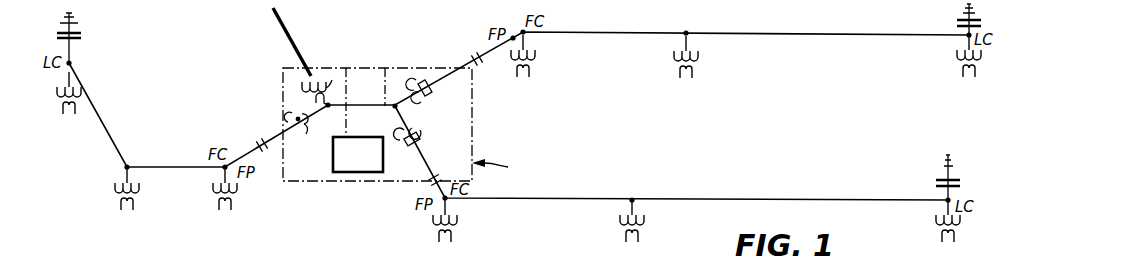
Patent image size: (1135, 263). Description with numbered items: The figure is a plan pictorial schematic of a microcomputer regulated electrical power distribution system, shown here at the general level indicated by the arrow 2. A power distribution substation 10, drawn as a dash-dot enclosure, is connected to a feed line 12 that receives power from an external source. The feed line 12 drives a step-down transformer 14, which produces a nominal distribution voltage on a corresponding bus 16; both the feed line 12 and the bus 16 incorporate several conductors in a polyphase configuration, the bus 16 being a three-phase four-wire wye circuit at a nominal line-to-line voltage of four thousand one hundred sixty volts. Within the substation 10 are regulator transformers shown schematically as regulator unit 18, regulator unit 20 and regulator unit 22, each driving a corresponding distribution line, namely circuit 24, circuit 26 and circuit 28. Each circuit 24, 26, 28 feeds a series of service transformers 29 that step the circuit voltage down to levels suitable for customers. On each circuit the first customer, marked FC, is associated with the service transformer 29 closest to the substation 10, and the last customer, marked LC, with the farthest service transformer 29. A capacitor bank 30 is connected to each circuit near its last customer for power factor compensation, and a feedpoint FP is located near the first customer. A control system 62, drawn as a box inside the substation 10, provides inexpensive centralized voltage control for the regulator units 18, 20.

The detail arrow 2 is at (500, 172).
The power distribution substation 10 is at (472, 138).
The feed line 12 is at (290, 15).
The step-down transformer 14 is at (331, 79).
The bus 16 is at (355, 101).
The regulator unit 18 is at (434, 97).
The regulator unit 20 is at (428, 141).
The regulator unit 22 is at (300, 128).
The circuit 24 is at (478, 59).
The circuit 26 is at (427, 172).
The circuit 28 is at (268, 135).
The service transformer 29 is at (75, 105).
The capacitor bank 30 is at (81, 37).
The control system 62 is at (346, 172).